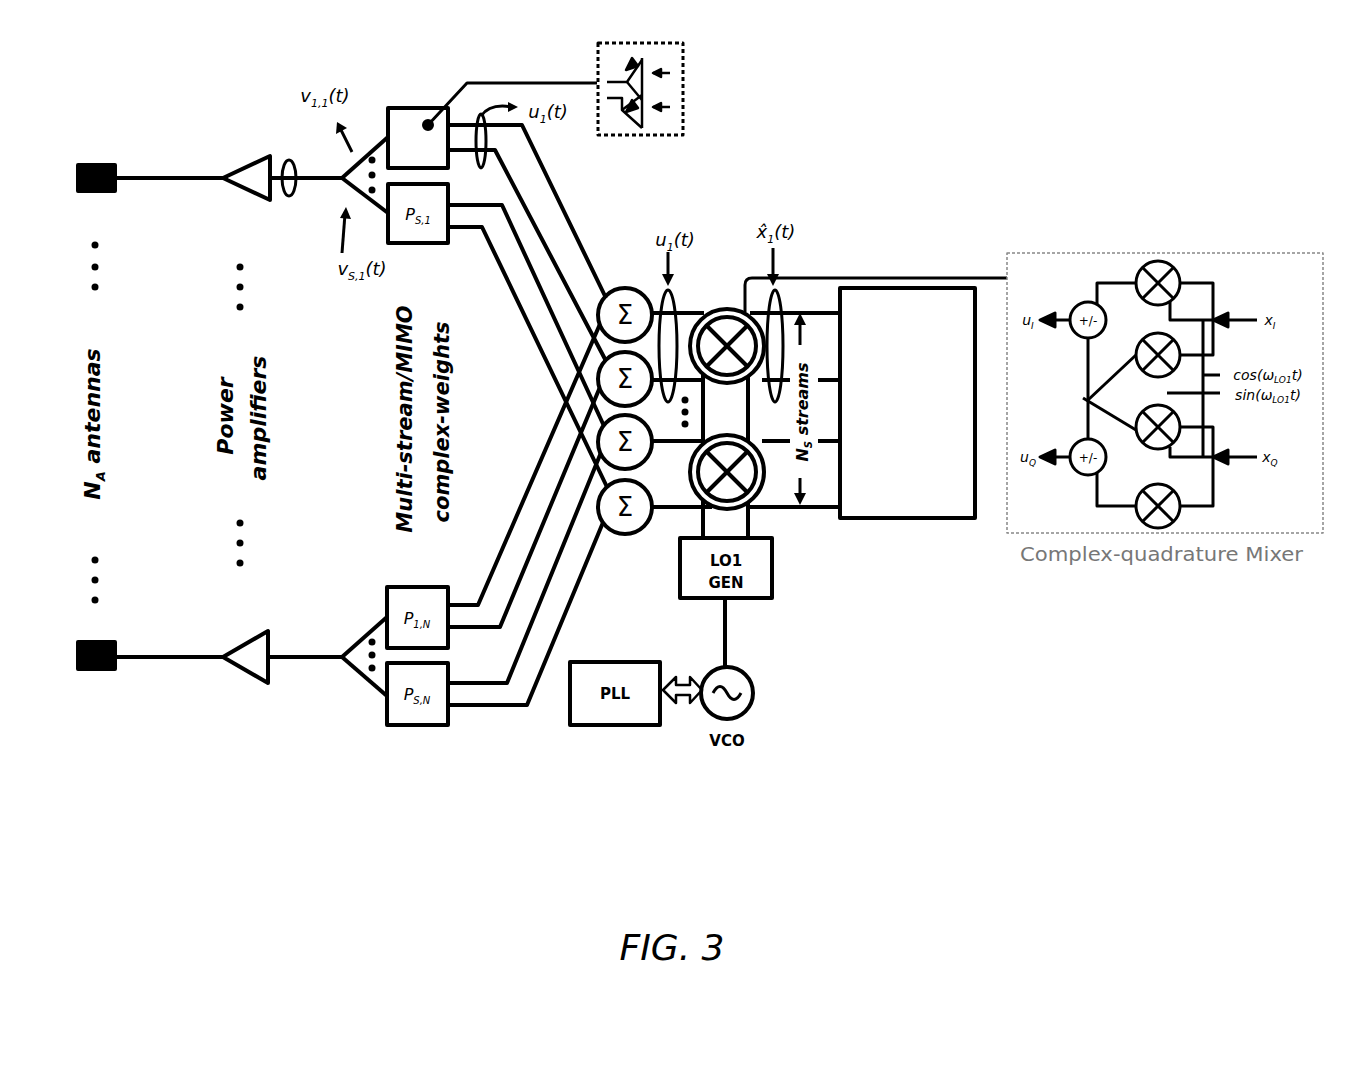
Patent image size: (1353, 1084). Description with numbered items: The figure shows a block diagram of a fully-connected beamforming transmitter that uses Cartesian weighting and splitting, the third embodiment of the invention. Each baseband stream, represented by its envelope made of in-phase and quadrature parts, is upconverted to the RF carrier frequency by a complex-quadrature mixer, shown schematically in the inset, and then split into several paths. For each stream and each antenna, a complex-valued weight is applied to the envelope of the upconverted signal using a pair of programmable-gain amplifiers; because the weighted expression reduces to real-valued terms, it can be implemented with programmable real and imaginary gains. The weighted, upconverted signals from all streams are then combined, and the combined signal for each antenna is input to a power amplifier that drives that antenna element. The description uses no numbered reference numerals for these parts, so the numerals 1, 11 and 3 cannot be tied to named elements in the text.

The amplified antenna signal s1(t) (power amplifier output) 1 is at (290, 203).
The complex weight P1,1 11 is at (418, 138).
The beam-forming DSP 3 is at (907, 403).